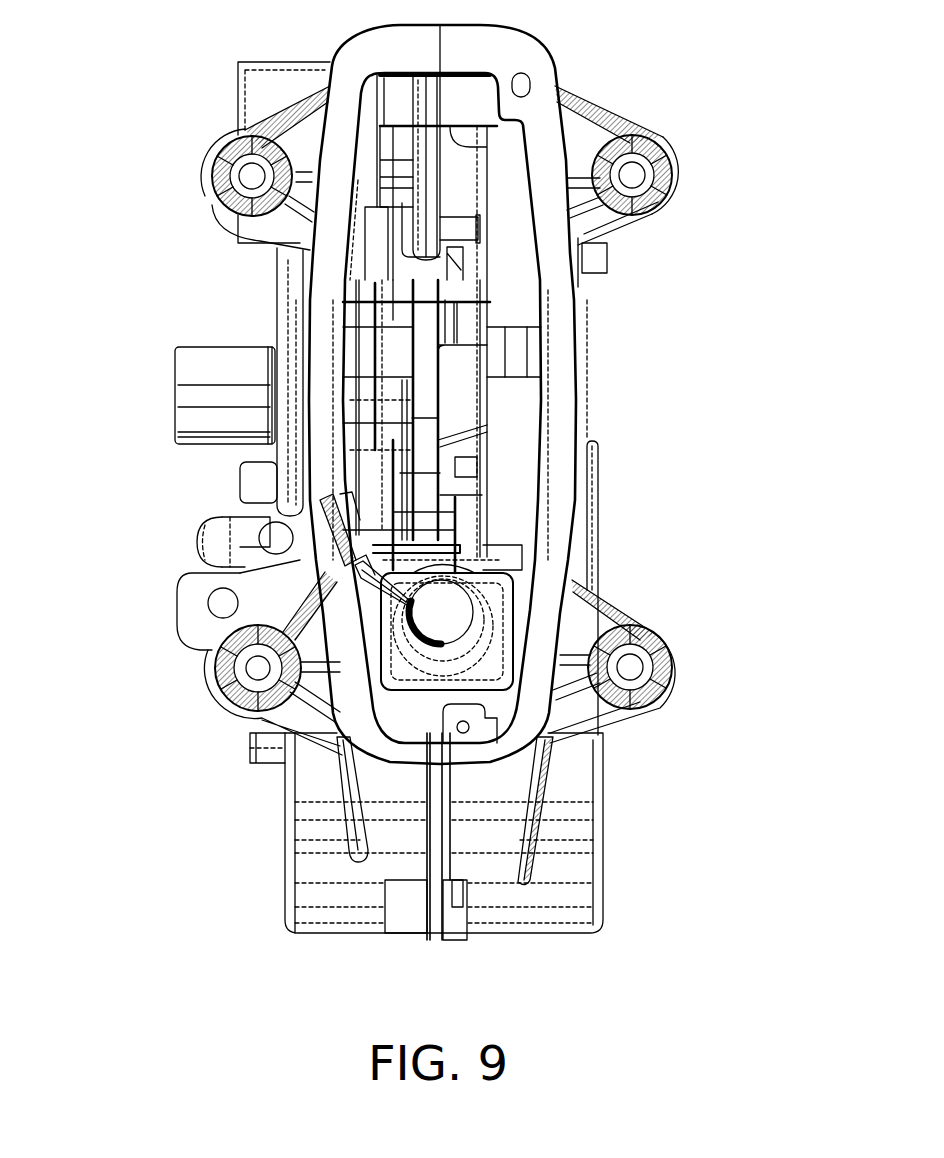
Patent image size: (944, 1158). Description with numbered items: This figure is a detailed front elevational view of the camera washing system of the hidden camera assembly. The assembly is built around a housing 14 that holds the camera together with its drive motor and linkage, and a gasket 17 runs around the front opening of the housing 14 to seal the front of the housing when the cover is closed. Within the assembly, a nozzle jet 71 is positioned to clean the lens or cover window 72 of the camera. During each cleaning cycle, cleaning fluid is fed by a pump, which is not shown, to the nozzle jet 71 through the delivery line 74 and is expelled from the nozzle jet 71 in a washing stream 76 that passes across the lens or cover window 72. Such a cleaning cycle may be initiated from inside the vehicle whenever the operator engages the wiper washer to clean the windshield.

The housing 14 is at (572, 823).
The gasket 17 is at (565, 338).
The nozzle jet 71 is at (327, 540).
The lens or cover window 72 is at (457, 611).
The delivery line 74 is at (210, 545).
The washing stream 76 is at (395, 588).